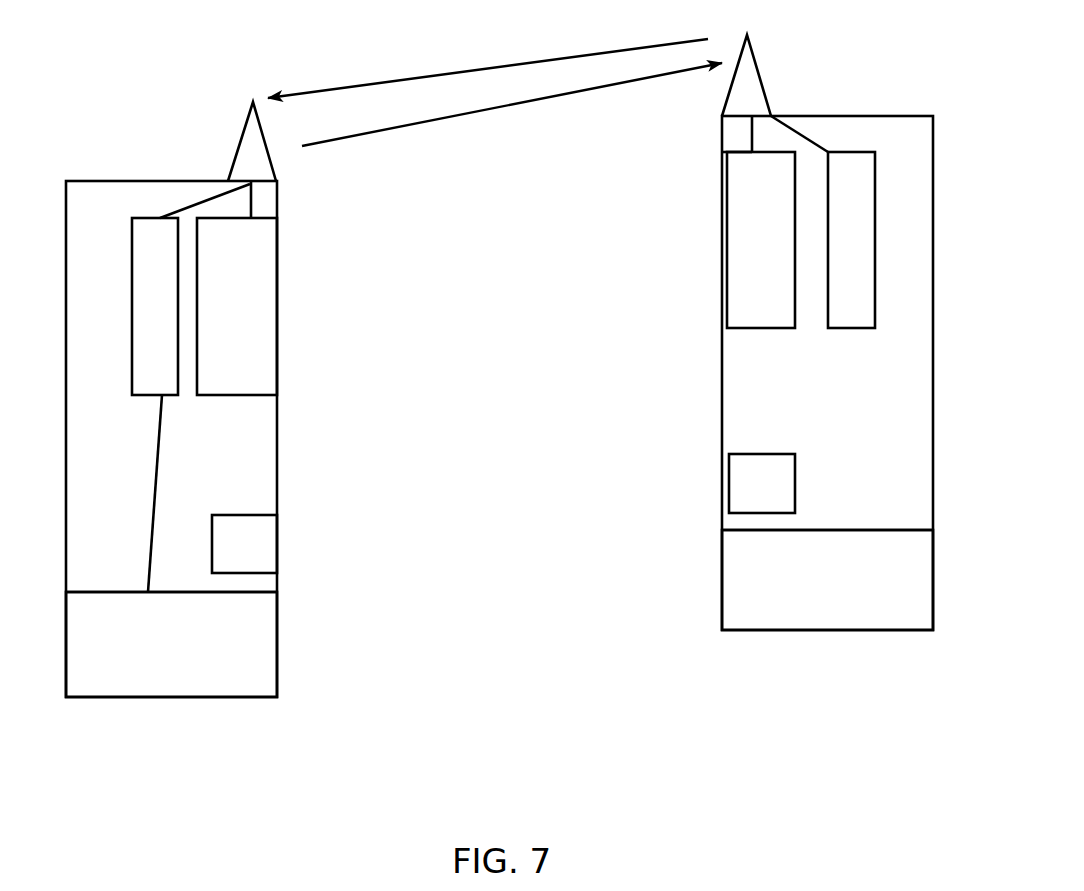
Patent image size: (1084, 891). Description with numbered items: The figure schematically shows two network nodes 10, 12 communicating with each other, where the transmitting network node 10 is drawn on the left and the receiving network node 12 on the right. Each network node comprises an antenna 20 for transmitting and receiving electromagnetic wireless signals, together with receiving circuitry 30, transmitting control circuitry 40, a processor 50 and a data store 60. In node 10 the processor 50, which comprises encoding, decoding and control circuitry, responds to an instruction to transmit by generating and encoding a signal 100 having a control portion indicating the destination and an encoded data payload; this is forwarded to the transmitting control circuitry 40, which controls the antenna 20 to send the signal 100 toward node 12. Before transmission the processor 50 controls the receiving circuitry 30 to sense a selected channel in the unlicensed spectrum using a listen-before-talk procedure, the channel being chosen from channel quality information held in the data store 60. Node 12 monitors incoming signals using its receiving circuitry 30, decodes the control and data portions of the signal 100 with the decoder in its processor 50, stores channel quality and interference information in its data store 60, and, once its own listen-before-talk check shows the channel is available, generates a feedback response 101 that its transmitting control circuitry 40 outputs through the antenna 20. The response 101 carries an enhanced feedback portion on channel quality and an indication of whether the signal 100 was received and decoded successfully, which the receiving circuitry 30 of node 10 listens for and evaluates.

The transmitting network node 10 is at (182, 704).
The receiving network node 12 is at (828, 637).
The antenna 20 is at (252, 162).
The receiving circuitry 30 is at (253, 313).
The transmitting control circuitry 40 is at (155, 339).
The processor 50 is at (253, 647).
The data store 60 is at (252, 548).
The signal 100 is at (512, 111).
The feedback response 101 is at (488, 68).